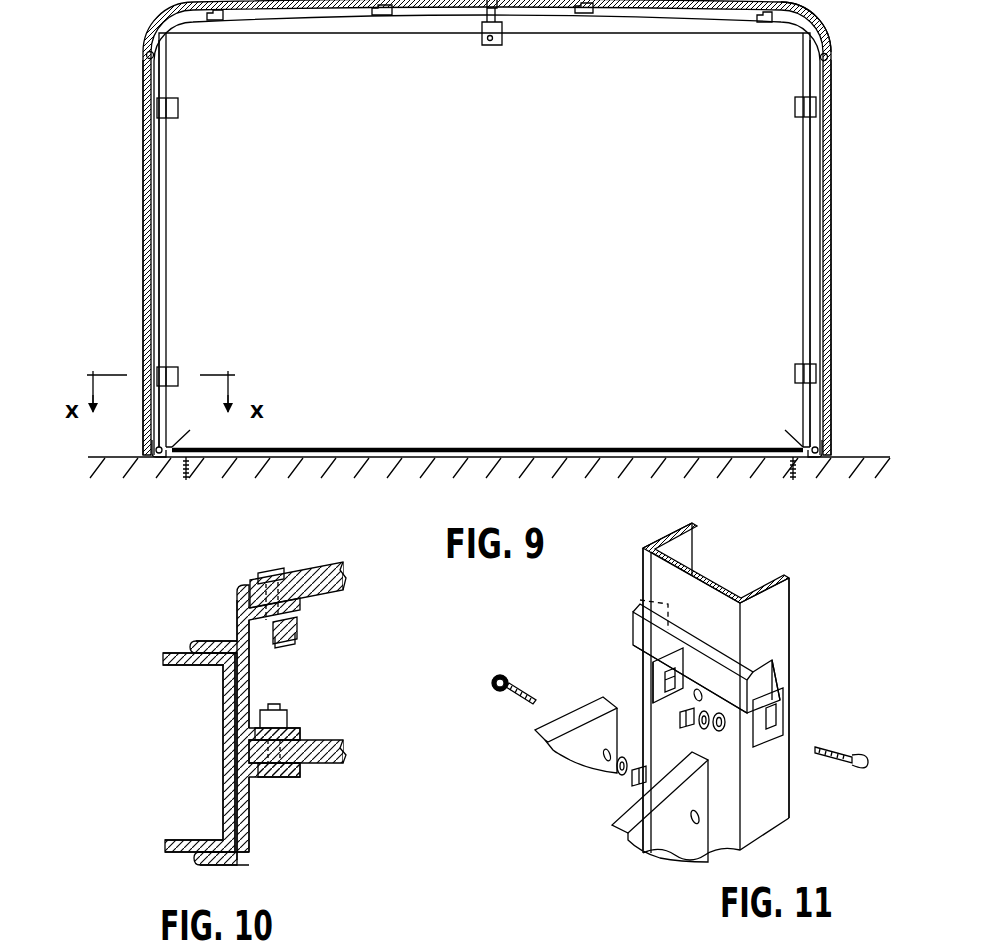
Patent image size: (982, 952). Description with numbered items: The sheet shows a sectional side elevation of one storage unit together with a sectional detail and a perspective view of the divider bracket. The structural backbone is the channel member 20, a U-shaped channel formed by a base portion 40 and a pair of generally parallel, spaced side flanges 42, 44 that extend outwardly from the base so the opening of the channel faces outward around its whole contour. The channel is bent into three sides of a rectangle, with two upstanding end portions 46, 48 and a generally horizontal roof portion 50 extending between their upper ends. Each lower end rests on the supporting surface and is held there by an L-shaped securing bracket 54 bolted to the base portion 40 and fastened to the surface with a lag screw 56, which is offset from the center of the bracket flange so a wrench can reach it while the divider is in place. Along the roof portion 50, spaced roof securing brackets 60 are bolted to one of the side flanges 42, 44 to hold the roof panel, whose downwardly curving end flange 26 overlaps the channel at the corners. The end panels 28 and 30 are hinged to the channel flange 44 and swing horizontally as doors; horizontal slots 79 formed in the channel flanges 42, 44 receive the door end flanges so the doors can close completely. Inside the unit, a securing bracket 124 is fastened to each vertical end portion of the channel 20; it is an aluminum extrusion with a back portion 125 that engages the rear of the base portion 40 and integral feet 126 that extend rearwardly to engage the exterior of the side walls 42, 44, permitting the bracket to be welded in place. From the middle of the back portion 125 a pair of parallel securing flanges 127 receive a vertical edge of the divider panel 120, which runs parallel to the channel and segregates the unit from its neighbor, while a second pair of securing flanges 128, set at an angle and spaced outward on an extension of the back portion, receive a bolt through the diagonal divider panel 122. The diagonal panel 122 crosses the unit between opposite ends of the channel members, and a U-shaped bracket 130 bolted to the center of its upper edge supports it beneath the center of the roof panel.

In FIG. 9, the channel member 20 is at (550, 14).
In FIG. 10, the channel member 20 is at (226, 710).
In FIG. 11, the channel member 20 is at (722, 580).
In FIG. 9, the end flange 26 is at (829, 42).
In FIG. 9, the end panel 28 is at (832, 207).
In FIG. 9, the end panel 30 is at (143, 178).
In FIG. 10, the base portion 40 is at (224, 752).
In FIG. 11, the base portion 40 is at (699, 606).
In FIG. 10, the side flange 42 is at (186, 840).
In FIG. 11, the side flange 42 is at (686, 553).
In FIG. 10, the side flange 44 is at (176, 666).
In FIG. 11, the side flange 44 is at (781, 627).
In FIG. 9, the end portion 46 is at (160, 252).
In FIG. 9, the end portion 48 is at (809, 248).
In FIG. 9, the roof portion 50 is at (440, 8).
In FIG. 9, the securing bracket 54 is at (190, 456).
In FIG. 9, the lag screw 56 is at (184, 477).
In FIG. 9, the roof securing bracket 60 is at (375, 15).
In FIG. 9, the slot 79 is at (154, 56).
In FIG. 10, the divider panel 120 is at (345, 752).
In FIG. 11, the divider panel 120 is at (578, 749).
In FIG. 9, the diagonal divider panel 122 is at (469, 219).
In FIG. 10, the diagonal divider panel 122 is at (345, 573).
In FIG. 11, the diagonal divider panel 122 is at (658, 846).
In FIG. 9, the securing bracket 124 is at (179, 108).
In FIG. 10, the securing bracket 124 is at (234, 599).
In FIG. 11, the securing bracket 124 is at (708, 648).
In FIG. 10, the back portion 125 is at (250, 682).
In FIG. 11, the back portion 125 is at (716, 697).
In FIG. 10, the feet 126 is at (212, 641).
In FIG. 11, the feet 126 is at (640, 600).
In FIG. 10, the securing flanges 127 is at (300, 730).
In FIG. 11, the securing flanges 127 is at (680, 698).
In FIG. 10, the securing flanges 128 is at (284, 576).
In FIG. 11, the securing flanges 128 is at (780, 721).
In FIG. 9, the U-shaped bracket 130 is at (488, 46).